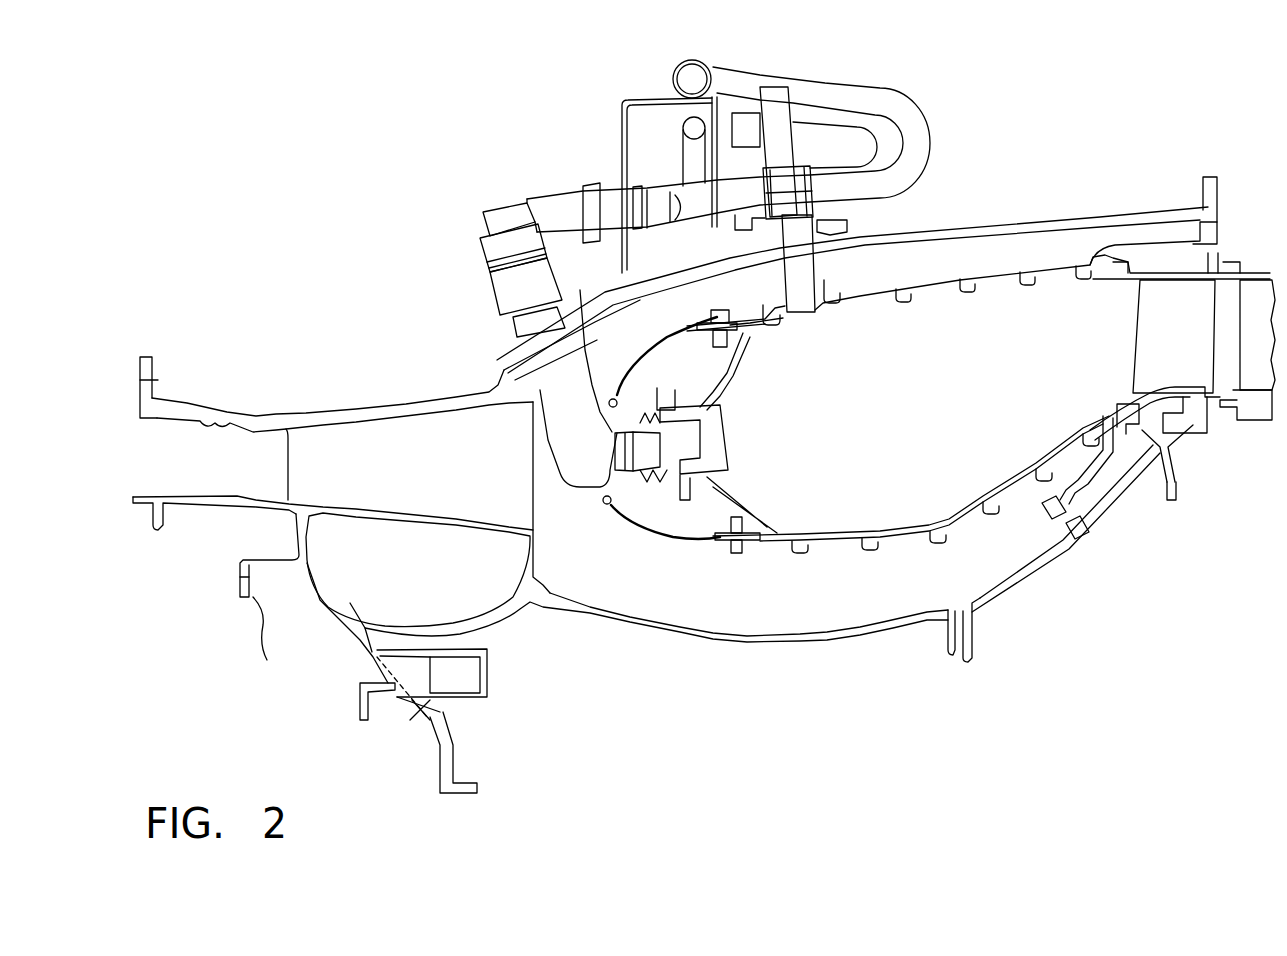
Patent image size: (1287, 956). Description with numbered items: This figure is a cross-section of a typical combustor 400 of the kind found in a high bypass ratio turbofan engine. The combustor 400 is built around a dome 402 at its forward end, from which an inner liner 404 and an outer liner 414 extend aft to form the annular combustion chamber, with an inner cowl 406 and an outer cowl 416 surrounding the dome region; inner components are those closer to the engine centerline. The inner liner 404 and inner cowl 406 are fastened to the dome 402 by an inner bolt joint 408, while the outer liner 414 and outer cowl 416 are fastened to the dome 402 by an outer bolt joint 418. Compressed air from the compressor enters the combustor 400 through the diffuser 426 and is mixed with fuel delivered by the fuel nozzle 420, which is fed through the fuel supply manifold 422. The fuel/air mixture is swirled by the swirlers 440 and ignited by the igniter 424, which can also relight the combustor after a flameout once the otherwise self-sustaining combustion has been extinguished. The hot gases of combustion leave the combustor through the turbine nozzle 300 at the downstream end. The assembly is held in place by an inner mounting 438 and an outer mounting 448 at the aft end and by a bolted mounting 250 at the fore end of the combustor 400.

The combustor 400 is at (301, 109).
The diffuser 426 is at (503, 487).
The bolted mounting 250 is at (362, 700).
The fuel nozzle 420 is at (483, 213).
The fuel supply manifold 422 is at (706, 61).
The igniter 424 is at (818, 258).
The outer bolt joint 418 is at (720, 308).
The outer cowl 416 is at (658, 339).
The swirlers 440 is at (665, 390).
The dome 402 is at (715, 490).
The inner cowl 406 is at (672, 535).
The inner bolt joint 408 is at (743, 552).
The inner liner 404 is at (802, 532).
The outer liner 414 is at (872, 300).
The inner mounting 438 is at (1100, 505).
The turbine nozzle 300 is at (1126, 402).
The outer mounting 448 is at (1203, 195).